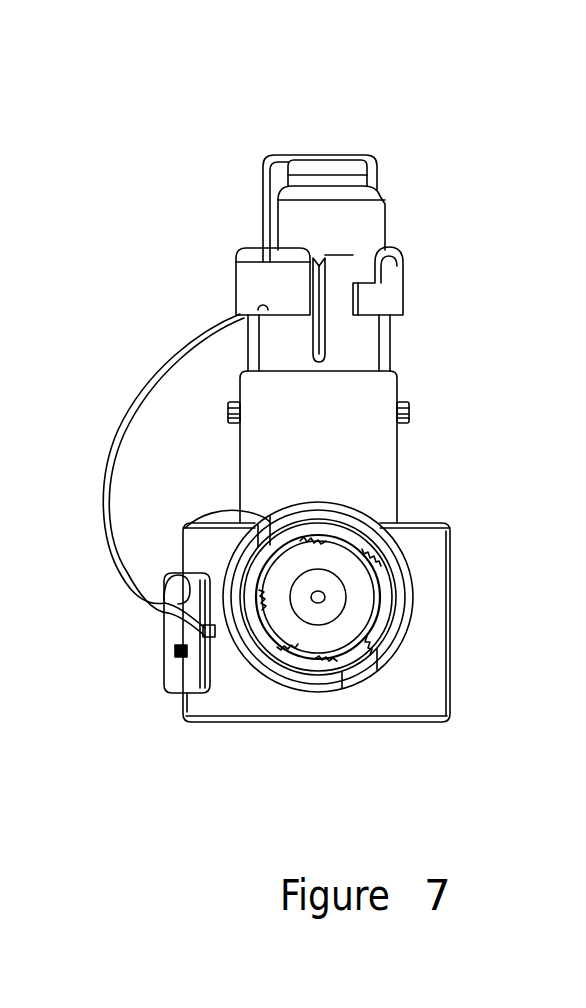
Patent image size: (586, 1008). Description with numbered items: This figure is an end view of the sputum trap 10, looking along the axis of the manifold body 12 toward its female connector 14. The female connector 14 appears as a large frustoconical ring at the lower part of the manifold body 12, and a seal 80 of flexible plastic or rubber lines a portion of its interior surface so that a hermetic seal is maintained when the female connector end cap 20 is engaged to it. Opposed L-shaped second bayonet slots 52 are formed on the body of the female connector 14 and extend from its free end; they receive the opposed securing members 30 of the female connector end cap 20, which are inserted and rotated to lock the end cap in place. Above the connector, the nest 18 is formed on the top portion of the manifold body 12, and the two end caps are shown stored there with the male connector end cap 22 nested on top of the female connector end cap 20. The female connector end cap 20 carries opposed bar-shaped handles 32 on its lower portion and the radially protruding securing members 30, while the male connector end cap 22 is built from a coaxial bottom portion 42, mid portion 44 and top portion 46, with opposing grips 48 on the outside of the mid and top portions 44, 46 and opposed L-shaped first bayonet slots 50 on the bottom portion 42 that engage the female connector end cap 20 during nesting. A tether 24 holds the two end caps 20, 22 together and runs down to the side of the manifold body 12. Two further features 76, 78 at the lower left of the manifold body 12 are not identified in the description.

The sputum trap 10 is at (291, 103).
The manifold body 12 is at (451, 572).
The female connector 14 is at (370, 515).
The nest 18 is at (240, 464).
The female connector end cap 20 is at (388, 338).
The male connector end cap 22 is at (398, 207).
The tether 24 is at (126, 428).
The securing members 30 is at (228, 412).
The handles 32 is at (313, 338).
The bottom portion 42 is at (236, 280).
The mid portion 44 is at (340, 238).
The top portion 46 is at (327, 170).
The grips 48 is at (263, 170).
The first bayonet slots 50 is at (388, 252).
The second bayonet slots 52 is at (185, 531).
The hose bracket shell 76 is at (185, 672).
The base corner 78 is at (197, 700).
The seal 80 is at (380, 576).